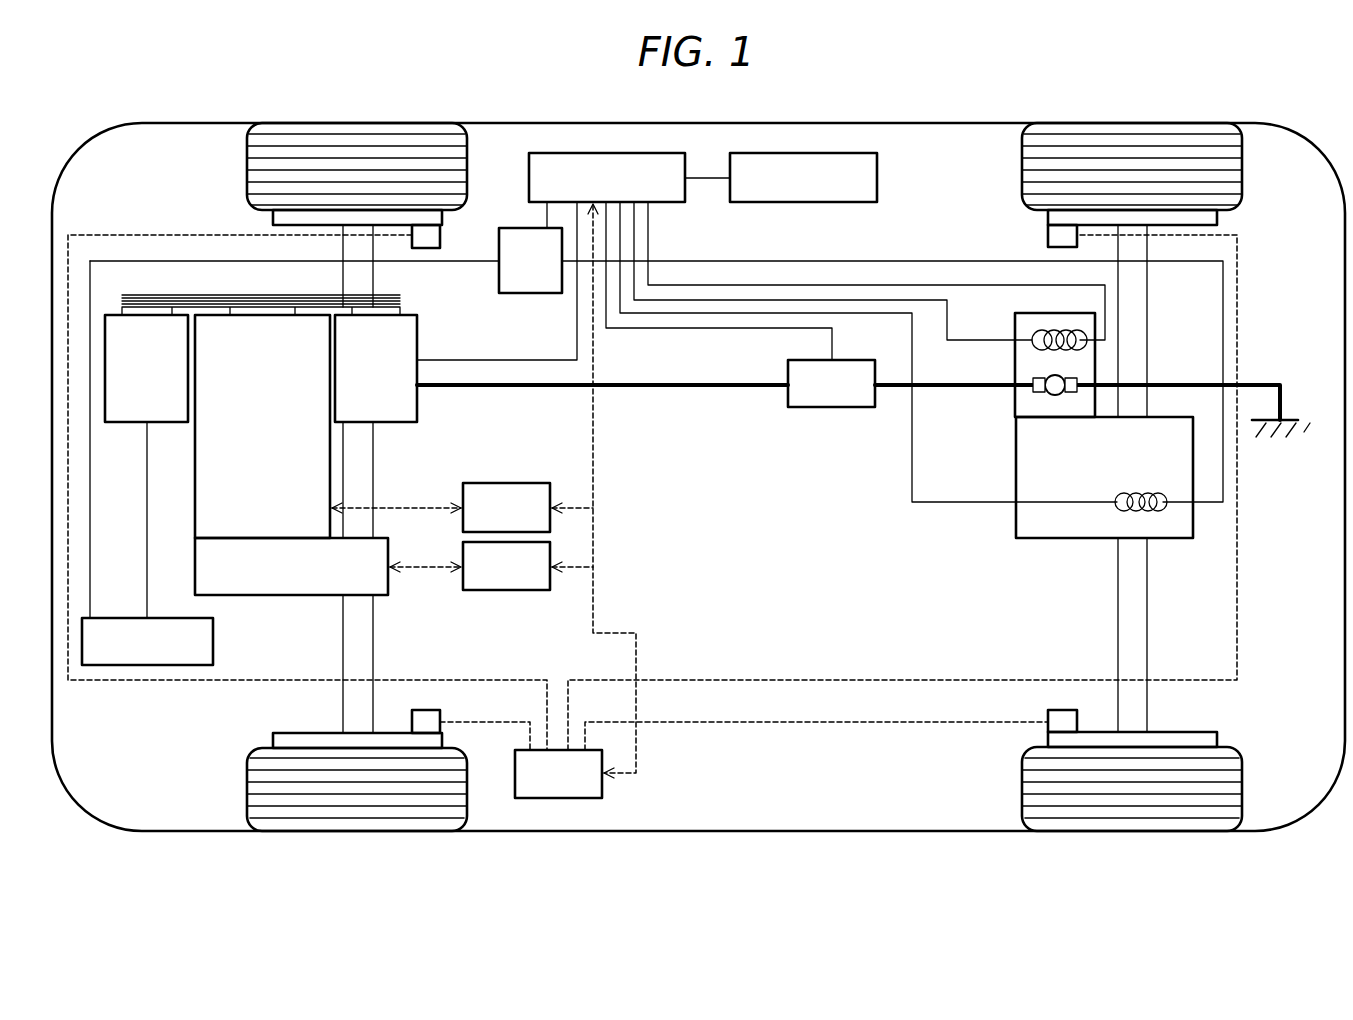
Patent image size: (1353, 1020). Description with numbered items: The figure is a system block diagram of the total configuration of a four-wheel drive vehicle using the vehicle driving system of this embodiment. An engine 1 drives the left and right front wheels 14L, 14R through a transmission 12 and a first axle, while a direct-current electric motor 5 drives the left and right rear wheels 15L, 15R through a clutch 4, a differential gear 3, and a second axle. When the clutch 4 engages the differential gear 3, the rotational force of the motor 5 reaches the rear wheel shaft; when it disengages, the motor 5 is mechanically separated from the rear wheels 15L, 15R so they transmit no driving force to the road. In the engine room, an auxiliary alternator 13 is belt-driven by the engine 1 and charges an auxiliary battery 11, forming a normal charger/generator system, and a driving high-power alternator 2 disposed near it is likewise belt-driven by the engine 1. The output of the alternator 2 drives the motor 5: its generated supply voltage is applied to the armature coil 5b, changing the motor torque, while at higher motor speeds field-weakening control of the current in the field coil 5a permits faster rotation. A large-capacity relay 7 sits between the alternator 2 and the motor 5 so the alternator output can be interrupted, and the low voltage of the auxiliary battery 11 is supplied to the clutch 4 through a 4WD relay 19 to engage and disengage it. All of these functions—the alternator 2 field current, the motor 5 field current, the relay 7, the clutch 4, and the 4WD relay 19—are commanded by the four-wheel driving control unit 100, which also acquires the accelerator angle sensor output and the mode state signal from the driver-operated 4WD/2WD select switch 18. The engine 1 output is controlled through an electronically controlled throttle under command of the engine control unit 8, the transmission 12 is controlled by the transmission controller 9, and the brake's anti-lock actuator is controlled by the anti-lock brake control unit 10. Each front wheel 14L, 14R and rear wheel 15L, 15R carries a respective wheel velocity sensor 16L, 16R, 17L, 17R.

The engine 1 is at (195, 490).
The driving high-power alternator (ALT2) 2 is at (404, 422).
The differential gear 3 is at (1051, 457).
The clutch 4 is at (1168, 506).
The DC electric motor 5 is at (1015, 322).
The field coil 5a is at (1038, 350).
The armature coil 5b is at (1045, 392).
The relay (RLY) 7 is at (832, 407).
The engine control unit (ECU) 8 is at (507, 483).
The transmission controller (TCU) 9 is at (507, 590).
The anti-lock brake control unit (ACU) 10 is at (602, 795).
The auxiliary battery 11 is at (145, 665).
The transmission 12 is at (258, 595).
The auxiliary alternator (ALT1) 13 is at (124, 422).
The right front wheel 14R is at (247, 172).
The left front wheel 14L is at (247, 794).
The right rear wheel 15R is at (1022, 172).
The left rear wheel 15L is at (1022, 794).
The wheel velocity sensor 16R is at (427, 248).
The wheel velocity sensor 16L is at (425, 710).
The wheel velocity sensor 17R is at (1048, 236).
The wheel velocity sensor 17L is at (1064, 710).
The 4WD/2WD select switch (4WD SW) 18 is at (813, 202).
The 4WD relay 19 is at (530, 293).
The four-wheel driving control unit (4WD CU) 100 is at (675, 202).